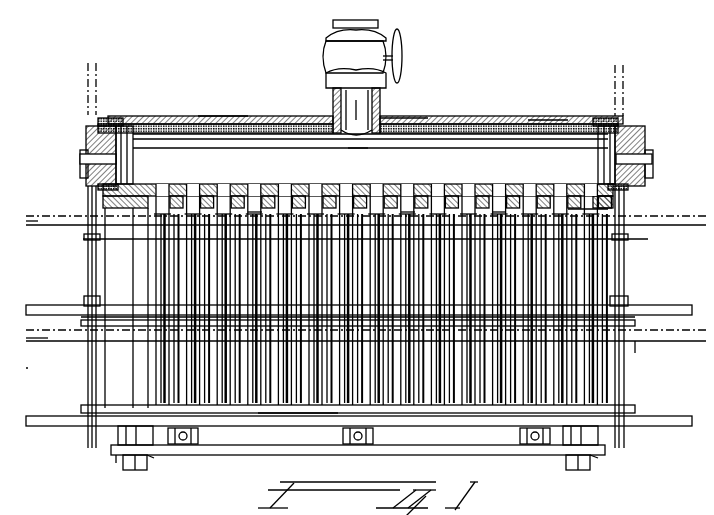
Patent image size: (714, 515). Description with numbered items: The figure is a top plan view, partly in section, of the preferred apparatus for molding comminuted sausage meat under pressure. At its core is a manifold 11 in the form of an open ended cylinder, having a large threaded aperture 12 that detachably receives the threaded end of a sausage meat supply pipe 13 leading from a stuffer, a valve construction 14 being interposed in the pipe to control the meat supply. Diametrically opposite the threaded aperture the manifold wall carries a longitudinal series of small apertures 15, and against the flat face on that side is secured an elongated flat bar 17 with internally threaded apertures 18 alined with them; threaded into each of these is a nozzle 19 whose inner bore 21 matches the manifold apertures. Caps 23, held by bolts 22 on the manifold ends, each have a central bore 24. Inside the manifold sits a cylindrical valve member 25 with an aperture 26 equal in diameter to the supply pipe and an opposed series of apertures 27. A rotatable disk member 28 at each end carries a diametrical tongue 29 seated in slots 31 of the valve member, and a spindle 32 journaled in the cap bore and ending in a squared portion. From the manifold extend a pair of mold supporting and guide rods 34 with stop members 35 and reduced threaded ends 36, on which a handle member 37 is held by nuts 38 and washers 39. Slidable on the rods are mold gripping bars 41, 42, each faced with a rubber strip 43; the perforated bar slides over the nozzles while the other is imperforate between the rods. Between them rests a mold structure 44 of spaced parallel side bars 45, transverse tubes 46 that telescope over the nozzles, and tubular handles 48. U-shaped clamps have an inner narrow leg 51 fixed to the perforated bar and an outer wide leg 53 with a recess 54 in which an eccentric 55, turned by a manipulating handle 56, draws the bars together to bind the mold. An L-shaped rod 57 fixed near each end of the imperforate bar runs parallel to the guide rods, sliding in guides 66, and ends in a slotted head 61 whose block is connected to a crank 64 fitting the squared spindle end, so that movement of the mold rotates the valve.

The manifold 11 is at (262, 108).
The threaded aperture 12 is at (384, 110).
The sausage meat supply pipe 13 is at (325, 95).
The valve construction 14 is at (328, 42).
The apertures 15 is at (340, 180).
The flat bar 17 is at (580, 200).
The internally threaded apertures 18 is at (254, 186).
The nozzle 19 is at (418, 184).
The inner bore 21 is at (224, 178).
The bolts 22 is at (112, 106).
The cap 23 is at (84, 138).
The central bore 24 is at (126, 118).
The cylindrical valve member 25 is at (214, 108).
The aperture 26 is at (348, 125).
The apertures 27 is at (496, 186).
The rotatable disk member 28 is at (176, 116).
The diametrical tongue 29 is at (126, 165).
The slots 31 is at (535, 110).
The spindle 32 is at (84, 178).
The mold supporting and guide rods 34 is at (100, 252).
The stop members 35 is at (112, 428).
The reduced threaded ends 36 is at (110, 450).
The handle member 37 is at (250, 447).
The nuts 38 is at (128, 462).
The washers 39 is at (140, 450).
The mold gripping bar 41 is at (640, 300).
The mold gripping bar 42 is at (640, 412).
The rubber strip 43 is at (552, 312).
The mold structure 44 is at (66, 347).
The side bars 45 is at (622, 338).
The tubes 46 is at (330, 398).
The tubular handles 48 is at (90, 327).
The inner narrow leg 51 is at (120, 293).
The outer wide leg 53 is at (188, 437).
The recess 54 is at (366, 428).
The eccentric 55 is at (340, 436).
The manipulating handle 56 is at (355, 436).
The L-shaped rod 57 is at (84, 239).
The slotted head 61 is at (85, 212).
The crank 64 is at (78, 160).
The guides 66 is at (616, 288).